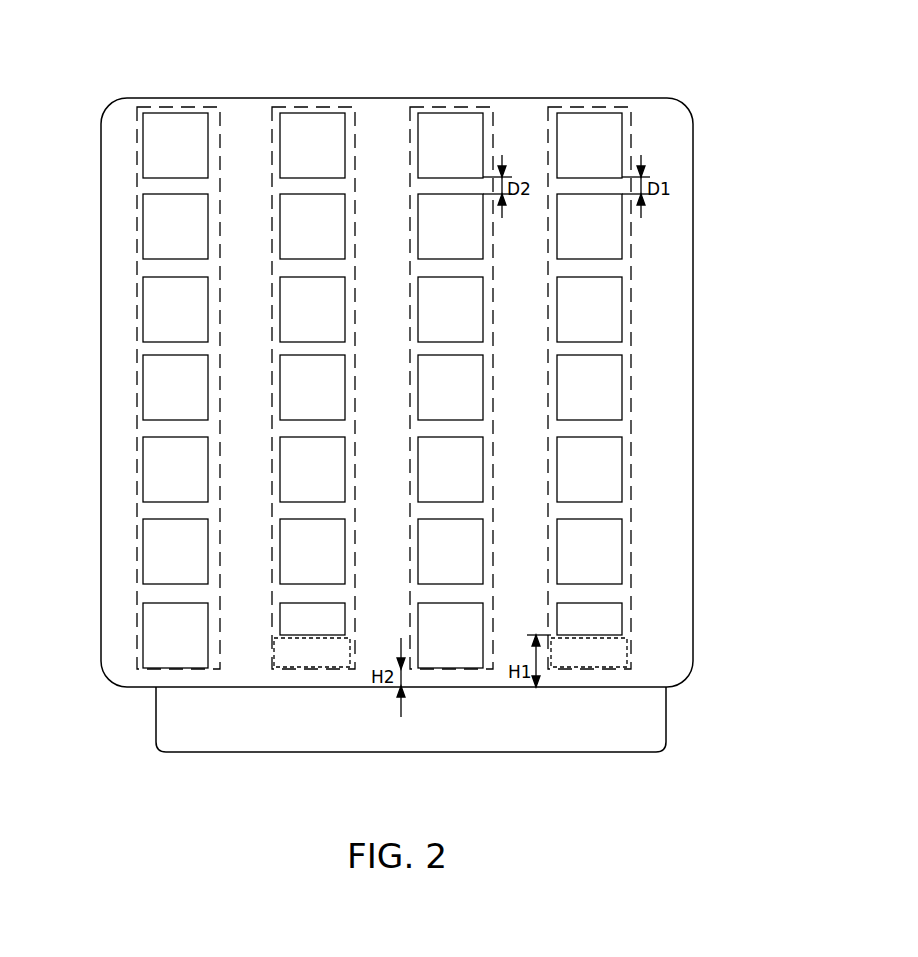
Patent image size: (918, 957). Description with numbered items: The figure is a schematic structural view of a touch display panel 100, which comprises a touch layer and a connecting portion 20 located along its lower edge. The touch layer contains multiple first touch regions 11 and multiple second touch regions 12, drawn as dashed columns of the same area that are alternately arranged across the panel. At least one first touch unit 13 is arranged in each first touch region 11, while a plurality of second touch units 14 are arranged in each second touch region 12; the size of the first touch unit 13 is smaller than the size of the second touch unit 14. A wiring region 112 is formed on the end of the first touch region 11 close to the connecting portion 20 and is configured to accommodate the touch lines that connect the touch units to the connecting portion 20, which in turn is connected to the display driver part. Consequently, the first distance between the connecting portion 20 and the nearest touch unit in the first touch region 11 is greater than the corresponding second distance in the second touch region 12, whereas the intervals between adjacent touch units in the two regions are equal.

The touch display panel 100 is at (85, 81).
The first touch region 11 is at (317, 110).
The second touch region 12 is at (178, 110).
The first touch unit 13 is at (614, 617).
The second touch unit 14 is at (615, 542).
The wiring region 112 is at (617, 658).
The connecting portion 20 is at (622, 717).